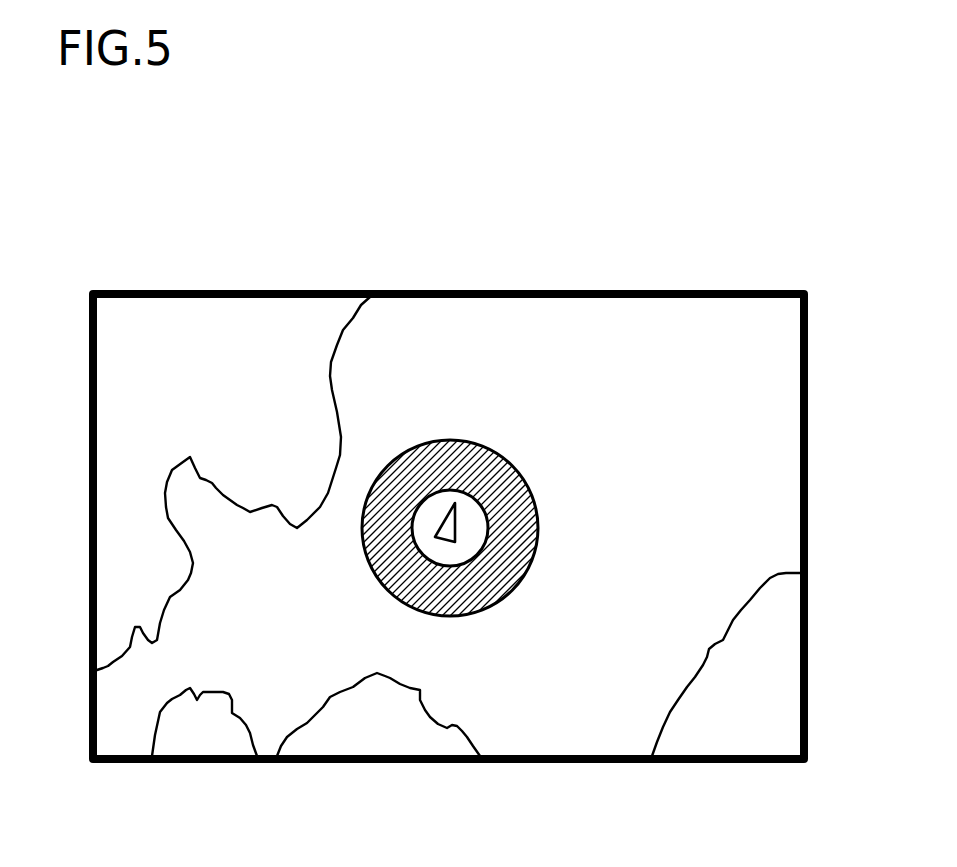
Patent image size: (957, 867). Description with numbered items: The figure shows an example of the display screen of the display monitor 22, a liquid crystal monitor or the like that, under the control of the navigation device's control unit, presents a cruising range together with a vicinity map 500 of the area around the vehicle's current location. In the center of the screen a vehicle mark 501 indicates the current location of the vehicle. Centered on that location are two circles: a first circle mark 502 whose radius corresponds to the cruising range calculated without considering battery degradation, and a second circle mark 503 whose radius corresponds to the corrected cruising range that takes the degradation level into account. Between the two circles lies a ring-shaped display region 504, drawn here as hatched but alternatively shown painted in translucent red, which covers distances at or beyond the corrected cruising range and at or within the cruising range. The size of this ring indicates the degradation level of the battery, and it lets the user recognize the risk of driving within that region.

The display monitor 22 is at (182, 291).
The vicinity map 500 is at (687, 323).
The vehicle mark 501 is at (456, 512).
The first circle mark 502 is at (452, 617).
The second circle mark 503 is at (480, 555).
The ring-shaped display region 504 is at (422, 468).